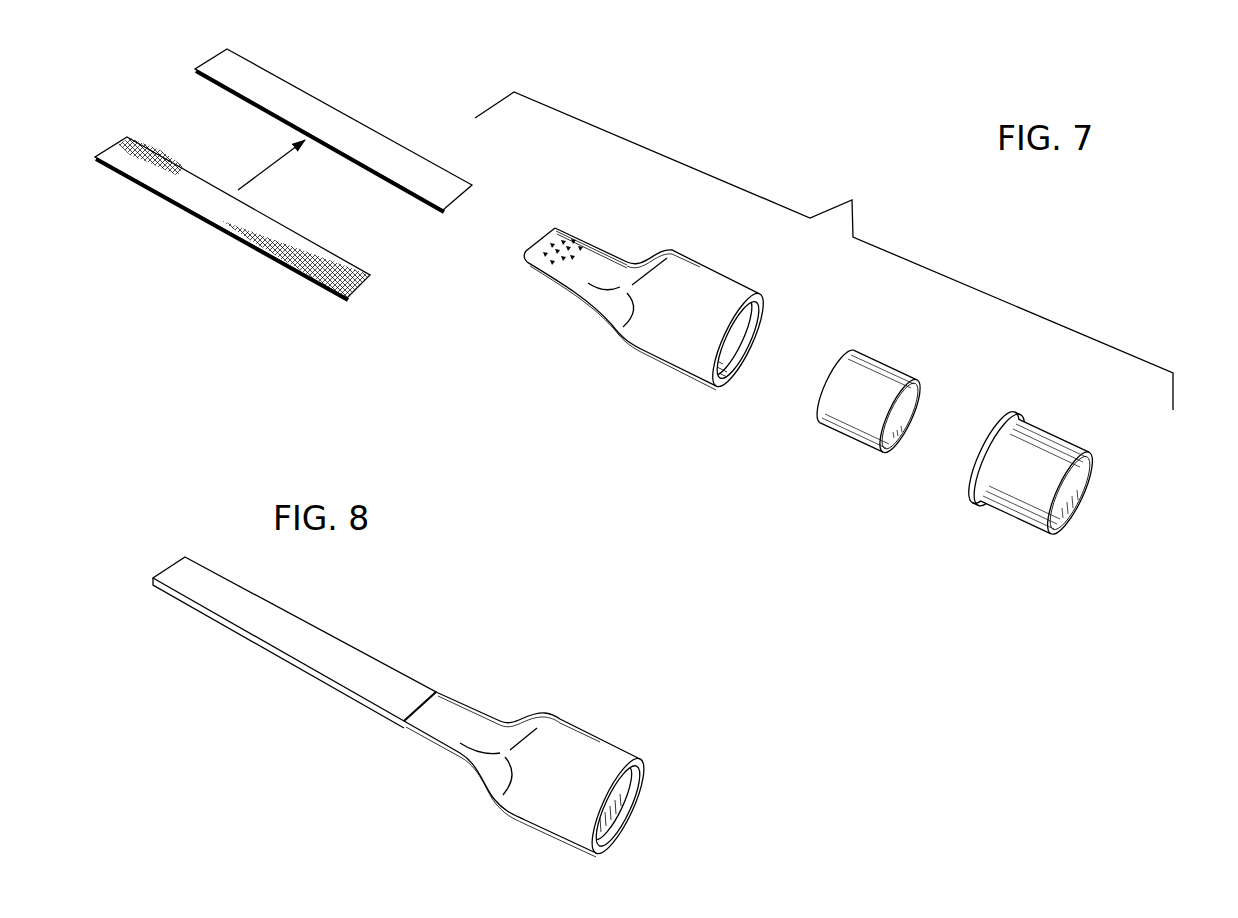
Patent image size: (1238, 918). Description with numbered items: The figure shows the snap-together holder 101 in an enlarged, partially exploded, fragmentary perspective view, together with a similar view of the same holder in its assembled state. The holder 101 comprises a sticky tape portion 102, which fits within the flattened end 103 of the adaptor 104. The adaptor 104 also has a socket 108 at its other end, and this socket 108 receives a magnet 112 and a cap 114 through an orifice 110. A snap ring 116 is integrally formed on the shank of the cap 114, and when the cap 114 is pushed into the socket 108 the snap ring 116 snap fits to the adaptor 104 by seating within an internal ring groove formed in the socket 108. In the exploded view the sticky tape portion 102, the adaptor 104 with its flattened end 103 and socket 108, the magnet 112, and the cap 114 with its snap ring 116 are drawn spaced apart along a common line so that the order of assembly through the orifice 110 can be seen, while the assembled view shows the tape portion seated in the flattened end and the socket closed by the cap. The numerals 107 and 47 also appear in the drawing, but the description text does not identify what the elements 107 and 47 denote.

In FIG. 7, the holder 101 is at (824, 251).
In FIG. 7, the sticky tape portion 102 is at (193, 115).
In FIG. 7, the flattened end 103 is at (562, 285).
In FIG. 7, the adaptor 104 is at (660, 313).
In FIG. 7, the grip dots 107 is at (555, 228).
In FIG. 7, the socket 108 is at (682, 292).
In FIG. 7, the orifice 110 is at (745, 340).
In FIG. 7, the magnet 112 is at (850, 440).
In FIG. 7, the cap 114 is at (1041, 516).
In FIG. 7, the snap ring 116 is at (1020, 412).
In FIG. 8, the handle with strip 47 is at (307, 672).